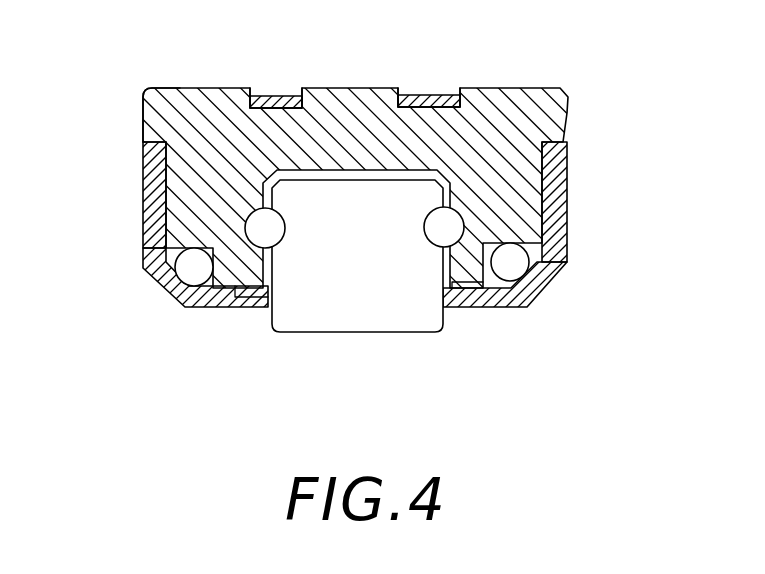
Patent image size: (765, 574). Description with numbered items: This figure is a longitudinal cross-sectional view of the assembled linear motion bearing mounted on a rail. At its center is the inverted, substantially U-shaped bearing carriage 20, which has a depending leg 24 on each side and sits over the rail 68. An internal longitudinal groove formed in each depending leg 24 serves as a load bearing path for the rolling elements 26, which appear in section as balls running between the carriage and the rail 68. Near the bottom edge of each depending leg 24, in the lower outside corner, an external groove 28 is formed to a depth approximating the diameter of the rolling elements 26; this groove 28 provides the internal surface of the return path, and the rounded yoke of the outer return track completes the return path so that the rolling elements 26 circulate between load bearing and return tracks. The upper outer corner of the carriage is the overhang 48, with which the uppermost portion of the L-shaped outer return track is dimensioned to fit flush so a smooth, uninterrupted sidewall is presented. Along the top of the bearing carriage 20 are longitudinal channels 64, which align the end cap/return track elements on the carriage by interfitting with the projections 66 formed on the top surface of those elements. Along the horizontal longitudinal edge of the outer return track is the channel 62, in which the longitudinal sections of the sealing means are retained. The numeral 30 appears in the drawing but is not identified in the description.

The bearing carriage 20 is at (533, 88).
The depending leg 24 is at (173, 197).
The rolling elements 26 is at (157, 283).
The external grooves 28 is at (183, 268).
The bottom plate 30 is at (215, 308).
The overhang 48 is at (142, 127).
The channel 62 is at (248, 303).
The longitudinal channels 64 is at (255, 92).
The projections 66 is at (280, 100).
The rail 68 is at (352, 318).